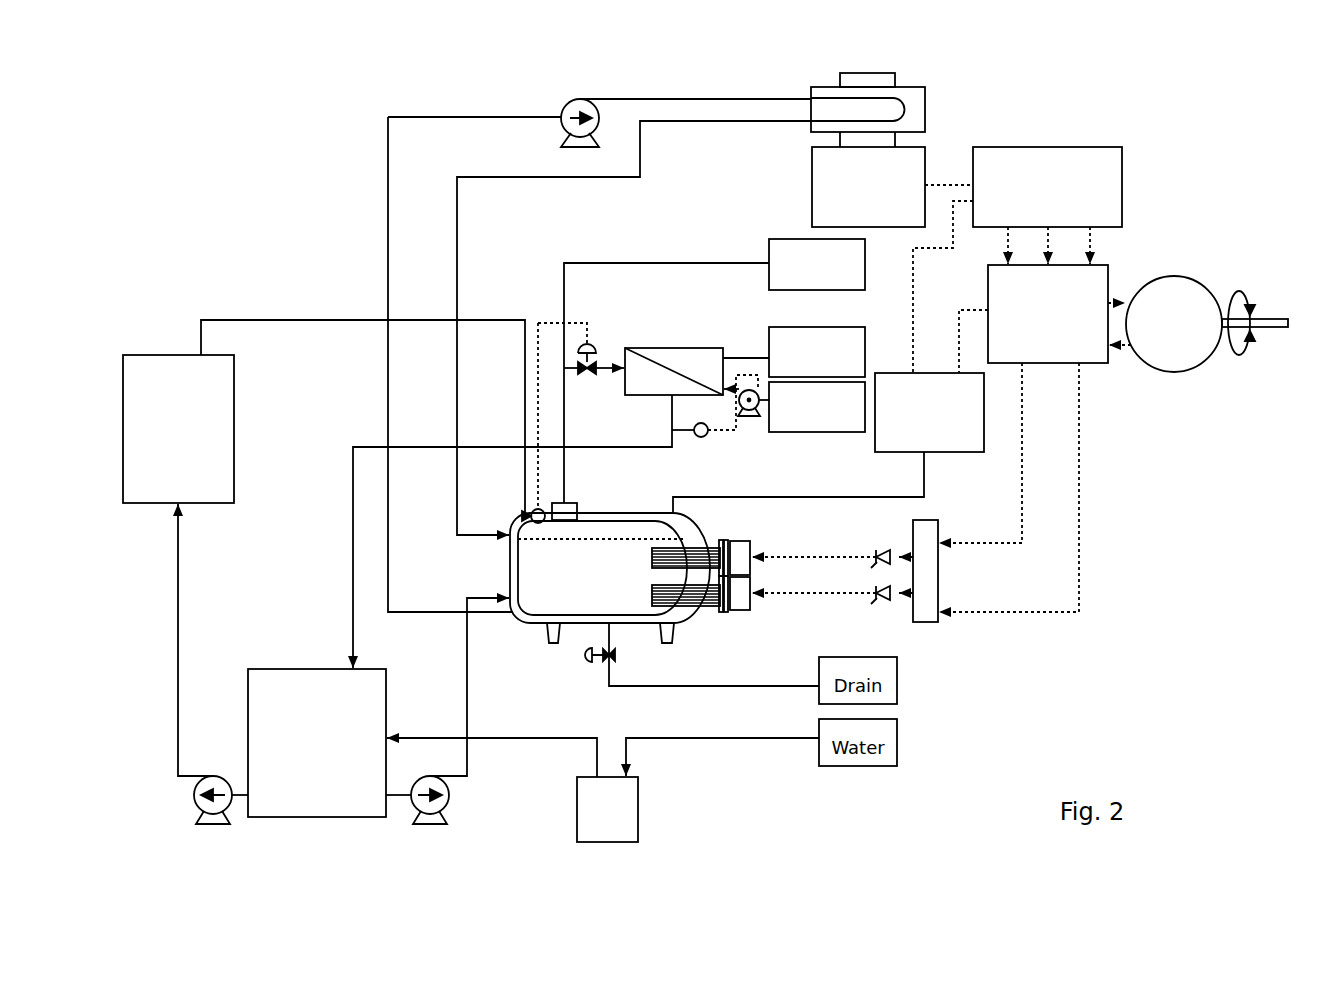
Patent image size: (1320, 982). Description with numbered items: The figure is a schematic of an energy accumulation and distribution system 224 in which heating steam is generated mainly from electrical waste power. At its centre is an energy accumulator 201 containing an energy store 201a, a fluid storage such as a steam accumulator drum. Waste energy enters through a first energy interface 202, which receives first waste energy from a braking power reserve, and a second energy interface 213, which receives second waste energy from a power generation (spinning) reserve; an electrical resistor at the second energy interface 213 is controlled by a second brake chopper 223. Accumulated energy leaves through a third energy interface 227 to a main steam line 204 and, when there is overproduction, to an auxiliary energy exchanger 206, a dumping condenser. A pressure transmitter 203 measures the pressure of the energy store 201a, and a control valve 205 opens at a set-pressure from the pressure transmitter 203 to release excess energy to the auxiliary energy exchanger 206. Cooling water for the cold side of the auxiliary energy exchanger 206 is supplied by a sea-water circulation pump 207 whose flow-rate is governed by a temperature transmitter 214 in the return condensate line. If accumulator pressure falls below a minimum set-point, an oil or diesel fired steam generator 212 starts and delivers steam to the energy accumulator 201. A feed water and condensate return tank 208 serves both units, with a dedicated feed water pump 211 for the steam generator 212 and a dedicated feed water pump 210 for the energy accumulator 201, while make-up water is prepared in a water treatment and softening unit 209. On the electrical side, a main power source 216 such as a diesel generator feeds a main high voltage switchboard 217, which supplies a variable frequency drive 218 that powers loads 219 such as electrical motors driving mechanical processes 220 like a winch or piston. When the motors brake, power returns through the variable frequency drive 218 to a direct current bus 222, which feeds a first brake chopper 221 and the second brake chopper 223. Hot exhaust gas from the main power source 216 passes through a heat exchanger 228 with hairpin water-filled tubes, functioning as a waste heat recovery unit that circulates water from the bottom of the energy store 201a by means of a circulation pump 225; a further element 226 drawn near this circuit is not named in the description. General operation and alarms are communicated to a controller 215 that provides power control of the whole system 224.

The energy accumulator 201 is at (509, 563).
The energy store 201a is at (540, 604).
The first energy interface 202 is at (742, 612).
The pressure transmitter 203 is at (533, 509).
The main steam line 204 is at (665, 262).
The control valve 205 is at (590, 347).
The auxiliary energy exchanger 206 is at (609, 484).
The sea-water circulation pump 207 is at (758, 419).
The feed water and condensate return tank 208 is at (317, 743).
The water treatment and softening unit 209 is at (615, 790).
The feed water pump 210 is at (440, 782).
The feed water pump 211 is at (205, 803).
The steam generator 212 is at (178, 429).
The second energy interface 213 is at (750, 546).
The temperature transmitter 214 is at (704, 438).
The controller 215 is at (963, 453).
The main power source 216 is at (892, 187).
The main high voltage switchboard 217 is at (1017, 260).
The variable frequency drive 218 is at (1035, 438).
The loads 219 is at (1166, 277).
The mechanical processes 220 is at (1247, 292).
The first brake chopper 221 is at (880, 602).
The bus 222 is at (936, 617).
The second brake chopper 223 is at (884, 549).
The energy accumulation and distribution system 224 is at (1207, 138).
The circulation pump 225 is at (893, 70).
The circulation pump 226 is at (560, 108).
The third energy interface 227 is at (576, 503).
The heat exchanger 228 is at (923, 103).